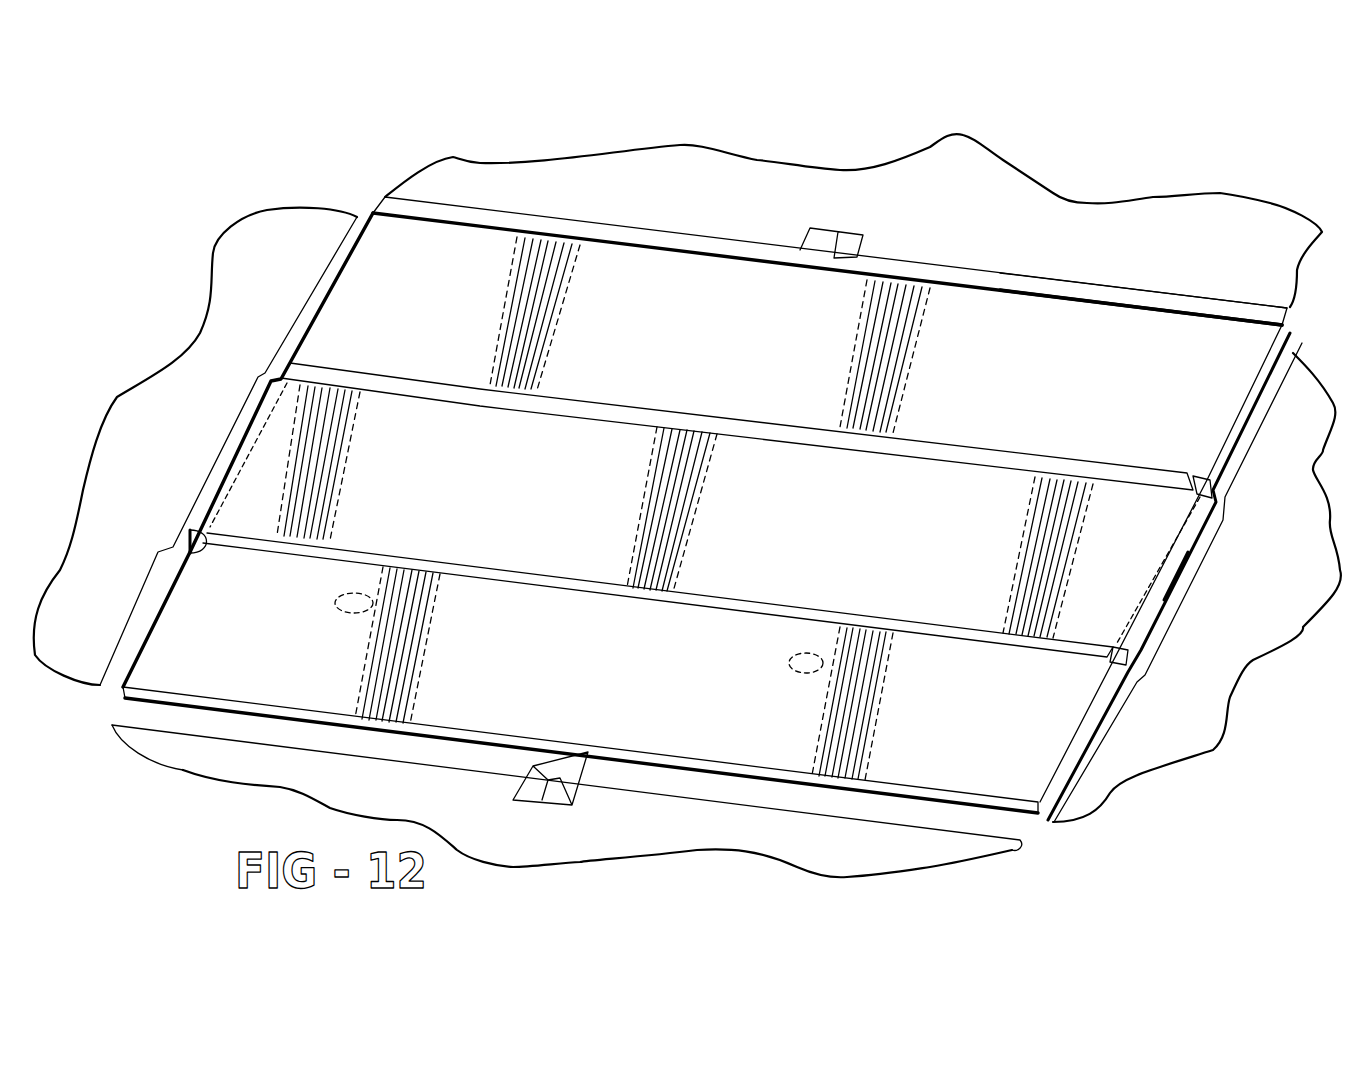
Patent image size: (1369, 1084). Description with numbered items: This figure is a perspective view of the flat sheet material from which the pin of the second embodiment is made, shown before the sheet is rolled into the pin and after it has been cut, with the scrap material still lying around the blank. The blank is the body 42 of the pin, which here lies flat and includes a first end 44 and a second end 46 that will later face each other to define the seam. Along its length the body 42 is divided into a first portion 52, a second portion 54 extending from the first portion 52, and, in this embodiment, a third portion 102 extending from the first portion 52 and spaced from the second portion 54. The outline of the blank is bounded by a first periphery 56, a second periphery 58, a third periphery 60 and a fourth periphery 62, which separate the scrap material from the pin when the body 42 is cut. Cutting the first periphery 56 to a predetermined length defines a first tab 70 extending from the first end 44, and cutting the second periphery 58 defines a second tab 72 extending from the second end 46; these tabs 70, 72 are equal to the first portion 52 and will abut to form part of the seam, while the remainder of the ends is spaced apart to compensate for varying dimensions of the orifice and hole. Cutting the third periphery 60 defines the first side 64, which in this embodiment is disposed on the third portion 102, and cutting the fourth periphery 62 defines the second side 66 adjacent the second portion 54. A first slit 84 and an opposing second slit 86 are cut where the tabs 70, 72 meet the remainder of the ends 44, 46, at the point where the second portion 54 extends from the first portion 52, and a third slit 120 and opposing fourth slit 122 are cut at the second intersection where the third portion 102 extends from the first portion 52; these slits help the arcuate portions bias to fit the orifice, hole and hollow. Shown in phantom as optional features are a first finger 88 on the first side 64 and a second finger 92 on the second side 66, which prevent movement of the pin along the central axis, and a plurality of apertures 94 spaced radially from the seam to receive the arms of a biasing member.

The body 42 is at (737, 493).
The first end 44 is at (1248, 410).
The second end 46 is at (313, 310).
The first portion 52 is at (275, 443).
The second portion 54 is at (428, 714).
The first periphery 56 is at (1300, 339).
The second periphery 58 is at (320, 243).
The third periphery 60 is at (545, 213).
The fourth periphery 62 is at (798, 795).
The first side 64 is at (1120, 307).
The second side 66 is at (223, 717).
The first tab 70 is at (1167, 566).
The second tab 72 is at (233, 463).
The first slit 84 is at (1108, 655).
The second slit 86 is at (195, 535).
The first finger 88 is at (828, 248).
The second finger 92 is at (543, 800).
The apertures 94 is at (353, 613).
The third portion 102 is at (428, 237).
The third slit 120 is at (1187, 478).
The fourth slit 122 is at (282, 378).